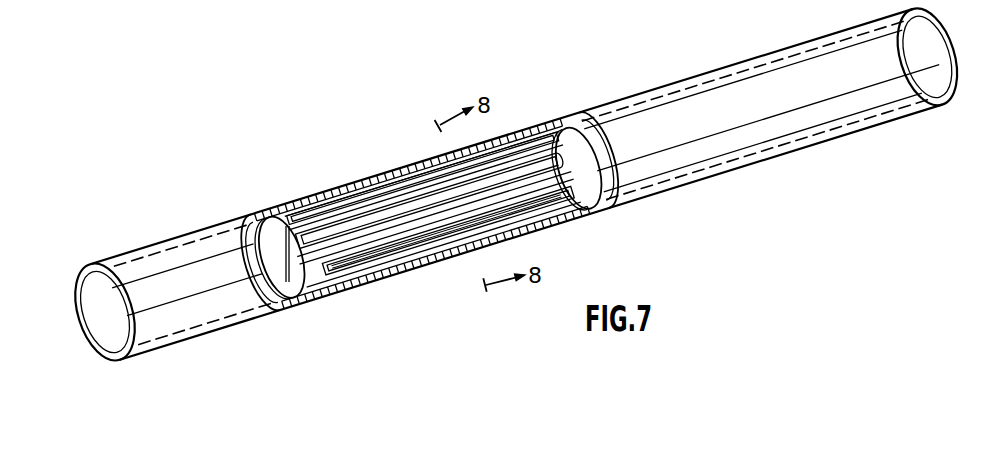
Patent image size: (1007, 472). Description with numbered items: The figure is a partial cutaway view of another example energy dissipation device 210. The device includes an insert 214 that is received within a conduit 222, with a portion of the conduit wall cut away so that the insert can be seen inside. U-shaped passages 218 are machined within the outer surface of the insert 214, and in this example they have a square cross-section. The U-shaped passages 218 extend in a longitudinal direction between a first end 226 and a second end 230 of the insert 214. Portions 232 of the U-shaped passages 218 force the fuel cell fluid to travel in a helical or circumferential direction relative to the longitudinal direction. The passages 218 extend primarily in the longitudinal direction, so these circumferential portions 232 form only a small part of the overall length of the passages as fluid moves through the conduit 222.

The energy dissipation device 210 is at (516, 184).
The conduit 222 is at (603, 112).
The first end 226 is at (278, 282).
The insert 214 is at (573, 175).
The second end 230 is at (620, 174).
The portions of the U-shaped passages 232 is at (562, 212).
The U-shaped passages 218 is at (390, 245).